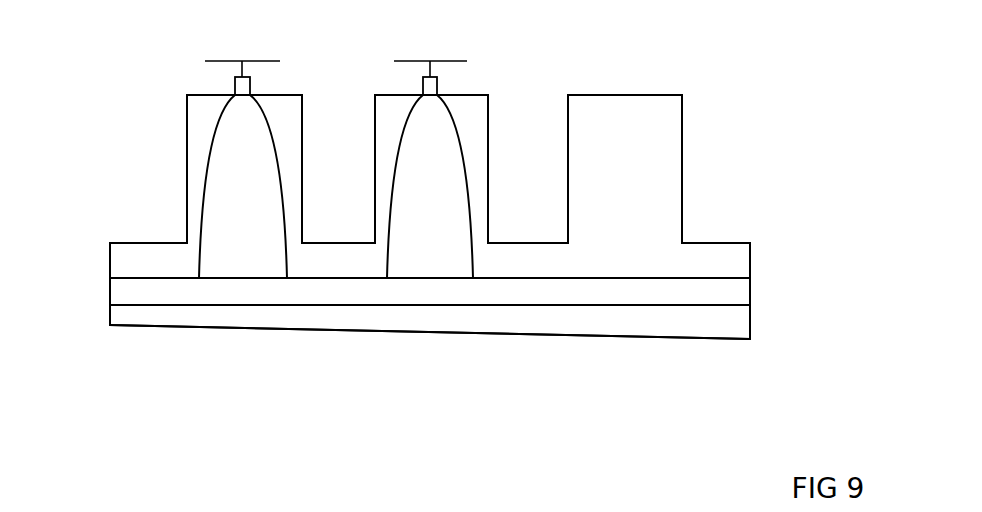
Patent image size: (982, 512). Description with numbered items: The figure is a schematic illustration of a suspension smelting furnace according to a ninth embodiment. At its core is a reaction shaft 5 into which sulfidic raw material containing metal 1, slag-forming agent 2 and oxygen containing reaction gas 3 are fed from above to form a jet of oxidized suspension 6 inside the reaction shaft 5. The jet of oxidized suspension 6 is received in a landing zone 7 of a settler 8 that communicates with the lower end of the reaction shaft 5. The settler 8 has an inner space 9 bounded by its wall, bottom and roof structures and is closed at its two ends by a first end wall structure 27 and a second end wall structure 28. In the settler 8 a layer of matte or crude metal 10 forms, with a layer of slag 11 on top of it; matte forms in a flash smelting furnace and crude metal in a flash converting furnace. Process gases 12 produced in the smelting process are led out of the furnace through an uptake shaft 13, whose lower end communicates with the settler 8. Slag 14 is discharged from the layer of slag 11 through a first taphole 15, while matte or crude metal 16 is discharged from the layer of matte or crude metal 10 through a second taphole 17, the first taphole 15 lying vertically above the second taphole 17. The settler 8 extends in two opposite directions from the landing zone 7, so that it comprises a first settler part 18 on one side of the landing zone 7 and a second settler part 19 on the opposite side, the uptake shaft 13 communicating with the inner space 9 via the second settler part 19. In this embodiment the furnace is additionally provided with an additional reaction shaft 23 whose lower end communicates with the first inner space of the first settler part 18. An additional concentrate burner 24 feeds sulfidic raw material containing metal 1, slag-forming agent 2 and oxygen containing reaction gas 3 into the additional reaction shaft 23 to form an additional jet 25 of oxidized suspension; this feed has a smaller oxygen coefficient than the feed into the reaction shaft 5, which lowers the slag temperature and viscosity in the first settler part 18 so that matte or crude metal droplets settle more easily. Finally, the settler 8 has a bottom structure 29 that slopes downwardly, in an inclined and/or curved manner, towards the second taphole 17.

The sulfidic raw material containing metal 1 is at (205, 61).
The slag-forming agent 2 is at (242, 61).
The oxygen containing reaction gas 3 is at (280, 61).
The reaction shaft 5 is at (488, 127).
The jet of oxidized suspension 6 is at (453, 178).
The landing zone 7 is at (443, 278).
The settler 8 is at (110, 319).
The inner space 9 is at (521, 272).
The layer of matte or crude metal 10 is at (315, 315).
The layer of slag 11 is at (363, 290).
The process gases 12 is at (682, 117).
The uptake shaft 13 is at (682, 180).
The slag 14 is at (110, 292).
The first taphole 15 is at (110, 288).
The matte or crude metal 16 is at (750, 320).
The second taphole 17 is at (750, 320).
The first settler part 18 is at (248, 348).
The second settler part 19 is at (612, 343).
The additional reaction shaft 23 is at (187, 128).
The additional concentrate burner 24 is at (234, 87).
The additional jet of oxidized suspension 25 is at (235, 174).
The first end wall structure 27 is at (110, 256).
The second end wall structure 28 is at (750, 272).
The bottom structure 29 is at (537, 335).